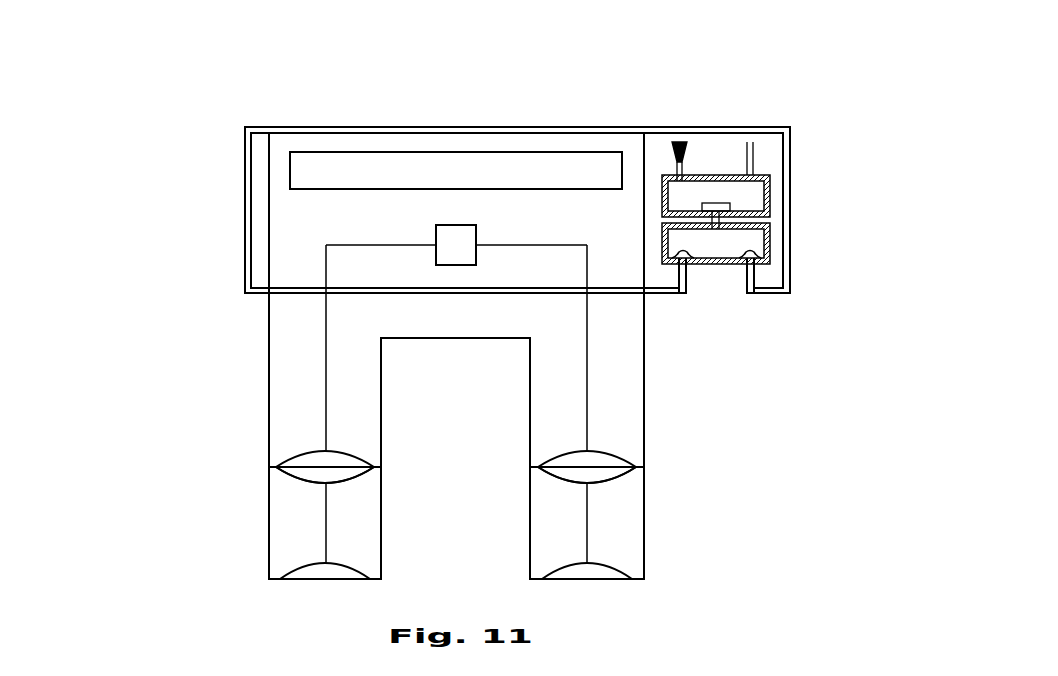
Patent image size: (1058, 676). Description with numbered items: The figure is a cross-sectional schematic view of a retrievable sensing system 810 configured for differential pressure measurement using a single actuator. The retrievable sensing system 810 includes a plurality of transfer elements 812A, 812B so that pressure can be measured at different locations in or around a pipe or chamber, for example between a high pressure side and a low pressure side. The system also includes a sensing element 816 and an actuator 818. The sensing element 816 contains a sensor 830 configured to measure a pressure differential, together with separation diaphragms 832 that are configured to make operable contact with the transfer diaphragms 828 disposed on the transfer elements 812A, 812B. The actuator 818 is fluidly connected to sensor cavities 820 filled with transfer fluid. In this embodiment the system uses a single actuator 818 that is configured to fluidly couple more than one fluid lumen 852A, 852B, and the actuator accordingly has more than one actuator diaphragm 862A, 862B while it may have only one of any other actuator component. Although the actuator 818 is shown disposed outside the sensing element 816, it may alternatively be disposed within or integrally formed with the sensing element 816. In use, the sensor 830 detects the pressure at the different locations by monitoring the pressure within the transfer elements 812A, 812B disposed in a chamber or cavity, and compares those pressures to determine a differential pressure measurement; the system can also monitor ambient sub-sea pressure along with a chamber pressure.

The retrievable sensing system 810 is at (258, 112).
The actuator 818 is at (779, 217).
The sensor 830 is at (461, 225).
The sensing element 816 is at (662, 428).
The transfer element 812A is at (387, 532).
The transfer element 812B is at (662, 548).
The sensor cavity 820 is at (323, 417).
The separation diaphragm 832 is at (358, 452).
The transfer diaphragm 828 is at (300, 479).
The actuator diaphragm 862A is at (683, 252).
The actuator diaphragm 862B is at (752, 253).
The fluid lumen 852A is at (672, 295).
The fluid lumen 852B is at (790, 272).